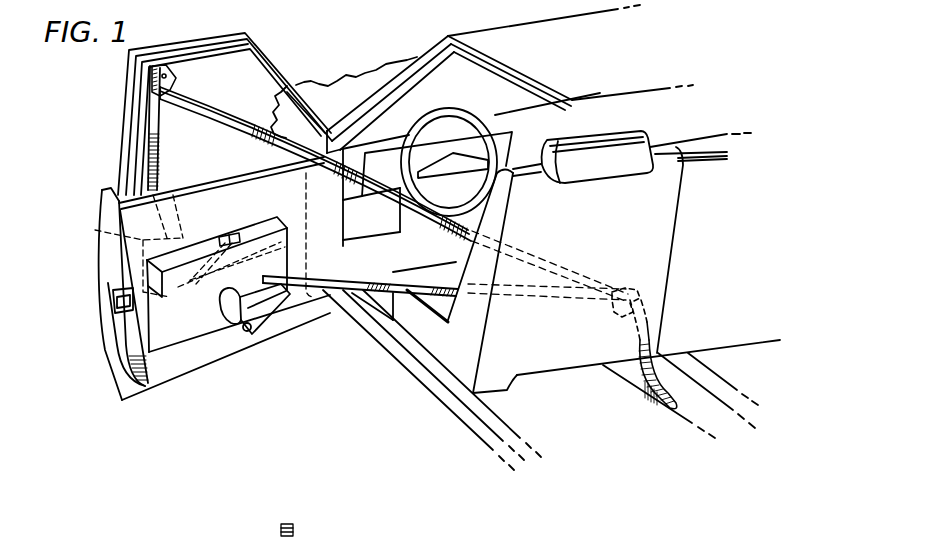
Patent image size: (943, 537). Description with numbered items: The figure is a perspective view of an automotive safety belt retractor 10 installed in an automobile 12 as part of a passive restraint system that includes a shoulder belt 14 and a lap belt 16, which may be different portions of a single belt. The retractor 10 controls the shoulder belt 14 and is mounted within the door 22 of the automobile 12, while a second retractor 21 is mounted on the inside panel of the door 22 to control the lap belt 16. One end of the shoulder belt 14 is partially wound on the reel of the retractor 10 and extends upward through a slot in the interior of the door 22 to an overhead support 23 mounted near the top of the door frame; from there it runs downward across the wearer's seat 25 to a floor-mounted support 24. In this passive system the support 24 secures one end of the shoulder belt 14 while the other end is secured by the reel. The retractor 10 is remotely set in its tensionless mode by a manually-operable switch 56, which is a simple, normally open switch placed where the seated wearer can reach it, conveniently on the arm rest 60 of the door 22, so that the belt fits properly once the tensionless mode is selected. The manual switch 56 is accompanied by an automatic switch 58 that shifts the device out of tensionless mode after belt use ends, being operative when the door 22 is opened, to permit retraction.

The automotive safety belt retractor 10 is at (93, 229).
The automobile 12 is at (433, 420).
The shoulder belt 14 is at (240, 110).
The lap belt 16 is at (367, 279).
The second retractor 21 is at (254, 344).
The door 22 is at (196, 350).
The overhead support 23 is at (166, 65).
The floor-mounted support 24 is at (642, 293).
The seat 25 is at (600, 213).
The manually-operable switch 56 is at (221, 236).
The automatic switch 58 is at (310, 235).
The arm rest 60 is at (246, 232).